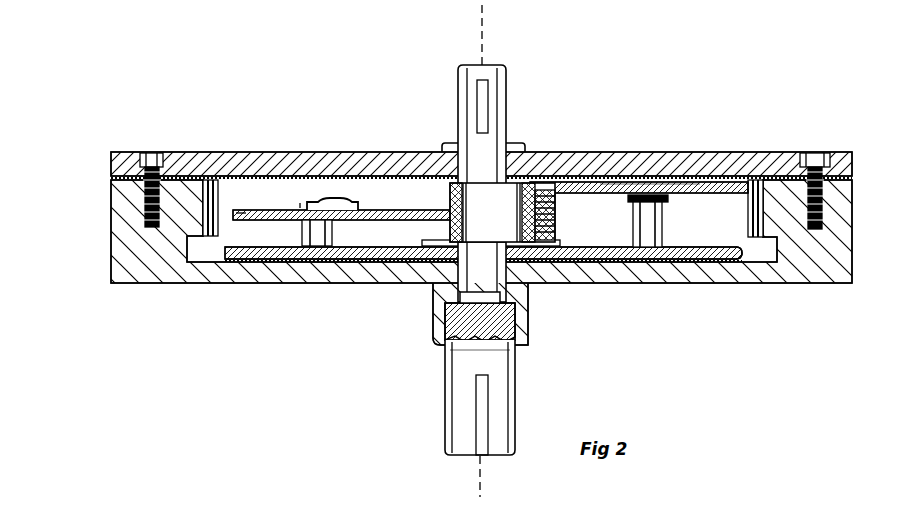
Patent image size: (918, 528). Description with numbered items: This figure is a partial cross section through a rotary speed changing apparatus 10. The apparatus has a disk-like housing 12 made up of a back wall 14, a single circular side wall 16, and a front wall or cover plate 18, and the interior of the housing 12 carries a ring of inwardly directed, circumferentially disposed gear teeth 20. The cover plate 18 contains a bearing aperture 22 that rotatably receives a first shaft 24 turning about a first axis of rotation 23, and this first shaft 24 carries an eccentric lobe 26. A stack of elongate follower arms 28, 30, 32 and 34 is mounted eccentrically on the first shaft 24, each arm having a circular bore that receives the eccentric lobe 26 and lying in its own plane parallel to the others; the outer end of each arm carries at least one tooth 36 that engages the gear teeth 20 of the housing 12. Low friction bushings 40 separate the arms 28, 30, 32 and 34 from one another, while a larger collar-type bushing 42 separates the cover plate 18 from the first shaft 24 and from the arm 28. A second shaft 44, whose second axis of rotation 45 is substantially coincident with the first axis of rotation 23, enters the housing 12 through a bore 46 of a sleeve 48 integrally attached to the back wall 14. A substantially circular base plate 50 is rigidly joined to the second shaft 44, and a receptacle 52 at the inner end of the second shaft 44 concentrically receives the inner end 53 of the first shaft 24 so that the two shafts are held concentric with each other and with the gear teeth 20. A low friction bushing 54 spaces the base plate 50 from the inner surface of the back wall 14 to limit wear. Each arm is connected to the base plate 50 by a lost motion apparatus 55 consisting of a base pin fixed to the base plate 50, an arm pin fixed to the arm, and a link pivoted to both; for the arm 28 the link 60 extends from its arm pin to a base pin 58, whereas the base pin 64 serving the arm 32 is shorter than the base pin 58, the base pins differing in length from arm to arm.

The rotary speed changing apparatus 10 is at (207, 97).
The housing 12 is at (442, 218).
The back wall 14 is at (190, 283).
The side wall 16 is at (111, 237).
The cover plate 18 is at (195, 152).
The gear teeth 20 is at (203, 237).
The bearing aperture 22 is at (462, 150).
The first axis of rotation 23 is at (485, 15).
The first shaft 24 is at (458, 72).
The eccentric lobe 26 is at (502, 212).
The follower arm 28 is at (706, 194).
The follower arm 30 is at (452, 206).
The follower arm 32 is at (275, 208).
The follower arm 34 is at (432, 238).
The tooth 36 is at (234, 219).
The low friction bushings 40 is at (550, 228).
The collar-type bushing 42 is at (507, 148).
The second shaft 44 is at (445, 430).
The second axis of rotation 45 is at (478, 485).
The bore 46 is at (448, 352).
The sleeve 48 is at (433, 340).
The base plate 50 is at (746, 258).
The receptacle 52 is at (515, 312).
The inner end 53 is at (500, 297).
The low friction bushing 54 is at (695, 262).
The lost motion apparatus 55 is at (300, 202).
The base pin 58 is at (663, 234).
The link 60 is at (362, 198).
The base pin 64 is at (302, 232).